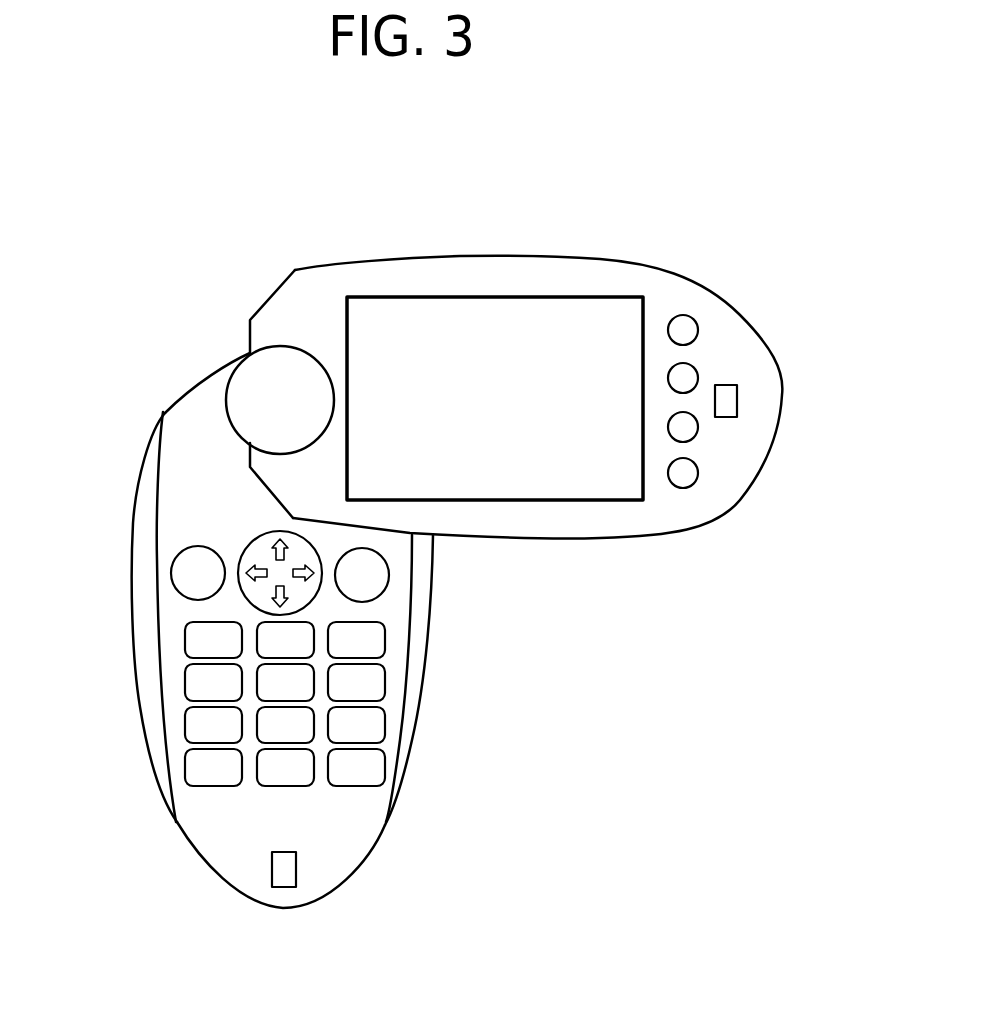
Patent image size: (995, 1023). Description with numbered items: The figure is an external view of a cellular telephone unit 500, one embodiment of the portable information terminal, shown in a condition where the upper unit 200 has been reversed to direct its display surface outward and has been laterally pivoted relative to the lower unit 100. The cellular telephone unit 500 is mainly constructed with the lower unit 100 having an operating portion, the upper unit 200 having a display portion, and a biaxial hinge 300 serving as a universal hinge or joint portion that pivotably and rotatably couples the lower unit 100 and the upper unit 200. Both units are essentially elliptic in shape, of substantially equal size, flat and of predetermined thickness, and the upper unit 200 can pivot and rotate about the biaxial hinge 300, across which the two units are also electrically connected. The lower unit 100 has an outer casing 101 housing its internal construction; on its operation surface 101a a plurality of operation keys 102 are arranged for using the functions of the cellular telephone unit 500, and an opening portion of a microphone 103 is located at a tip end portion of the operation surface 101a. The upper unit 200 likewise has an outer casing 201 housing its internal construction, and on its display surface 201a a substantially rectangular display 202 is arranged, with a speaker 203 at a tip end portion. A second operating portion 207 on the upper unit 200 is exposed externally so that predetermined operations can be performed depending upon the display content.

The lower unit 100 is at (393, 818).
The outer casing 101 is at (141, 463).
The operation surface 101a is at (210, 804).
The operation keys 102 is at (120, 540).
The microphone 103 is at (283, 878).
The upper unit 200 is at (673, 541).
The outer casing 201 is at (525, 258).
The display surface 201a is at (302, 320).
The display 202 is at (508, 482).
The speaker 203 is at (737, 400).
The second operating portion 207 is at (693, 318).
The biaxial hinge 300 is at (218, 394).
The cellular telephone unit 500 is at (546, 702).